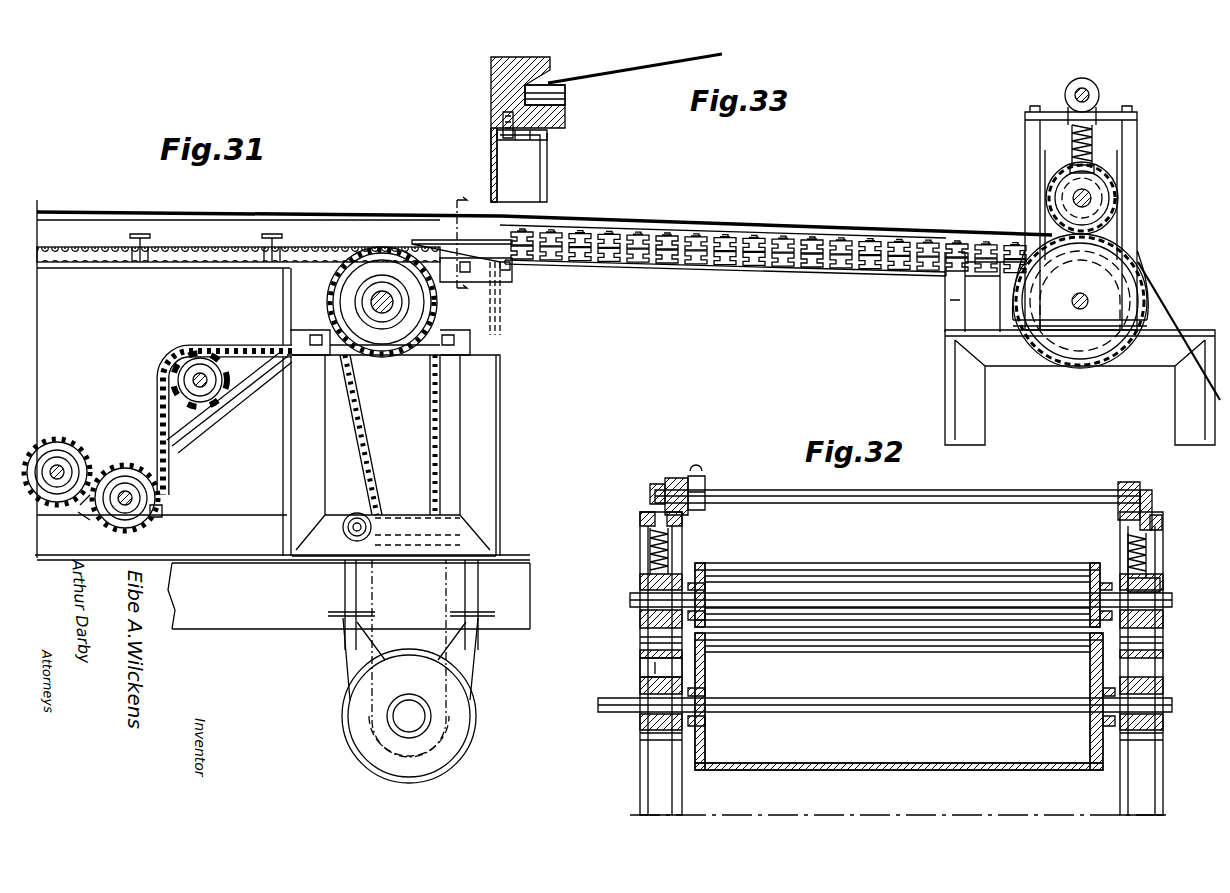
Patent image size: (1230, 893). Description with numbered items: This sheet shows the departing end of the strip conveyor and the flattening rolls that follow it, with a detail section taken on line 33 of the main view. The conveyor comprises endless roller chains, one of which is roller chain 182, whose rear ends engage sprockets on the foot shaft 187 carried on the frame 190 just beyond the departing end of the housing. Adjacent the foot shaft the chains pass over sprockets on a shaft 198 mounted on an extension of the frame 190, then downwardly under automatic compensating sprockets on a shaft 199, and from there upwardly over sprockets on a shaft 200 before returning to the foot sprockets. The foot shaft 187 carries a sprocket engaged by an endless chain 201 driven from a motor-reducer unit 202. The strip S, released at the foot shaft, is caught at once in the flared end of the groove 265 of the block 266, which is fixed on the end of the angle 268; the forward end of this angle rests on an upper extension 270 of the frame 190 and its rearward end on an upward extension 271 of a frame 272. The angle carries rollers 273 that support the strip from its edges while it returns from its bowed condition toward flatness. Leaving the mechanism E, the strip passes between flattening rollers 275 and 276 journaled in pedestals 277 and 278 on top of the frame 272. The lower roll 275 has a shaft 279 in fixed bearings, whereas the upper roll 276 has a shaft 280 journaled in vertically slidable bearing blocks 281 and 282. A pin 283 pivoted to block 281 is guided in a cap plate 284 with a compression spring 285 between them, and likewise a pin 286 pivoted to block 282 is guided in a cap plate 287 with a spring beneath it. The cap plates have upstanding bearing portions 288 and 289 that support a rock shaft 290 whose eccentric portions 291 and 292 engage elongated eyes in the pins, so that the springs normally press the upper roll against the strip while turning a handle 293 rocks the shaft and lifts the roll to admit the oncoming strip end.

In FIG. 31, the endless roller chain 182 is at (176, 262).
In FIG. 31, the foot shaft 187 is at (370, 303).
In FIG. 31, the frame 190 is at (482, 414).
In FIG. 31, the shaft 198 is at (70, 460).
In FIG. 31, the shaft 199 is at (140, 497).
In FIG. 31, the shaft 200 is at (178, 378).
In FIG. 31, the endless chain 201 is at (440, 470).
In FIG. 31, the motor-reducer unit 202 is at (470, 738).
In FIG. 31, the section line 33 is at (442, 245).
In FIG. 31, the flared end of groove 265 is at (440, 256).
In FIG. 33, the flared end of groove 265 is at (540, 86).
In FIG. 31, the block 266 is at (500, 272).
In FIG. 33, the block 266 is at (491, 86).
In FIG. 31, the angle 268 is at (723, 265).
In FIG. 33, the angle 268 is at (547, 138).
In FIG. 31, the upper extension 270 is at (500, 318).
In FIG. 31, the upward extension 271 is at (945, 296).
In FIG. 31, the frame 272 is at (960, 390).
In FIG. 32, the frame 272 is at (665, 748).
In FIG. 31, the rollers 273 is at (730, 230).
In FIG. 31, the flattening roller 275 is at (1091, 370).
In FIG. 32, the flattening roller 275 is at (965, 770).
In FIG. 31, the flattening roller 276 is at (1118, 194).
In FIG. 32, the flattening roller 276 is at (920, 560).
In FIG. 31, the pedestal 277 is at (1137, 158).
In FIG. 32, the pedestal 277 is at (1160, 668).
In FIG. 32, the pedestal 278 is at (640, 654).
In FIG. 32, the shaft 279 is at (806, 702).
In FIG. 31, the shaft 280 is at (1092, 198).
In FIG. 32, the shaft 280 is at (805, 595).
In FIG. 32, the bearing block 281 is at (1160, 622).
In FIG. 32, the bearing block 282 is at (640, 616).
In FIG. 31, the pin 283 is at (1094, 102).
In FIG. 32, the pin 283 is at (1150, 546).
In FIG. 32, the cap plate 284 is at (1156, 516).
In FIG. 31, the compression spring 285 is at (1072, 140).
In FIG. 32, the compression spring 285 is at (1150, 530).
In FIG. 32, the pin 286 is at (655, 547).
In FIG. 32, the cap plate 287 is at (640, 518).
In FIG. 32, the upstanding bearing portion 288 is at (1128, 484).
In FIG. 32, the upstanding bearing portion 289 is at (680, 480).
In FIG. 32, the rock shaft 290 is at (985, 486).
In FIG. 32, the eccentric portion 291 is at (1150, 496).
In FIG. 32, the eccentric portion 292 is at (652, 490).
In FIG. 32, the handle 293 is at (706, 478).
In FIG. 31, the strip S is at (272, 210).
In FIG. 33, the strip S is at (620, 71).
In FIG. 31, the mechanism E is at (800, 204).